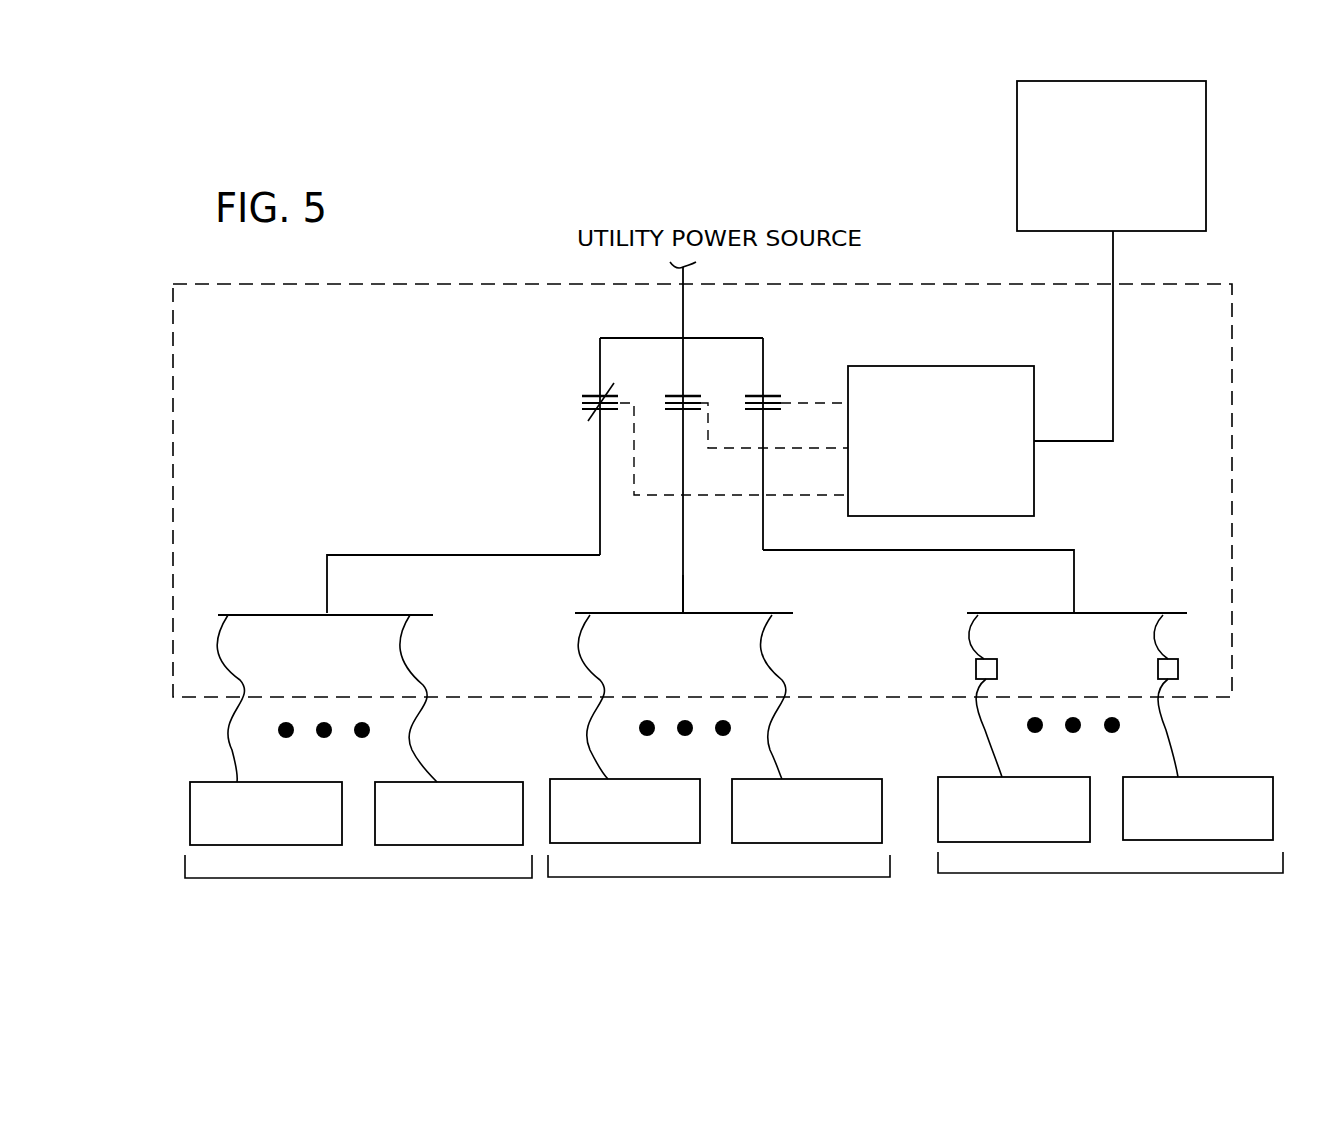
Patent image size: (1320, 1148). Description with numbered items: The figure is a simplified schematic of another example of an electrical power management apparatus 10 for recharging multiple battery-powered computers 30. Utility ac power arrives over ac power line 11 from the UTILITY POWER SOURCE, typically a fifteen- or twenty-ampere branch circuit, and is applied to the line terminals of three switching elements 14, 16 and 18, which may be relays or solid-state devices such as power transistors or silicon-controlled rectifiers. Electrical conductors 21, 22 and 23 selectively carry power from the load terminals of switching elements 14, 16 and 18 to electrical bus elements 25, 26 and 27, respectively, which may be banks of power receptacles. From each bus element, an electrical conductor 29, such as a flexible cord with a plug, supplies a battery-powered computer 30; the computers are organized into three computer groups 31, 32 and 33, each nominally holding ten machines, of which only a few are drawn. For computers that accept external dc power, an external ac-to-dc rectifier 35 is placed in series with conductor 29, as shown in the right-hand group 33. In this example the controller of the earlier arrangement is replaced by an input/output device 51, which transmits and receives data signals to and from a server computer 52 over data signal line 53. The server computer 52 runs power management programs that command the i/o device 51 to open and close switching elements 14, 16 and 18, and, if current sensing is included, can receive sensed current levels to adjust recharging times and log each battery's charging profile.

The electrical power management apparatus 10 is at (890, 278).
The ac power line 11 is at (683, 300).
The switching element 14 is at (592, 388).
The switching element 16 is at (672, 386).
The switching element 18 is at (752, 386).
The electrical conductor 21 is at (460, 555).
The electrical conductor 22 is at (683, 575).
The electrical conductor 23 is at (917, 548).
The electrical bus element 25 is at (265, 613).
The electrical bus element 26 is at (623, 613).
The electrical bus element 27 is at (1010, 613).
The electrical conductor 29 is at (227, 762).
The battery-powered computer 30 is at (190, 812).
The computer group 31 is at (360, 878).
The computer group 32 is at (720, 877).
The computer group 33 is at (1110, 873).
The external ac-to-dc rectifier 35 is at (976, 672).
The input/output (i/o) device 51 is at (935, 366).
The server computer 52 is at (1017, 153).
The data signal line 53 is at (1113, 370).